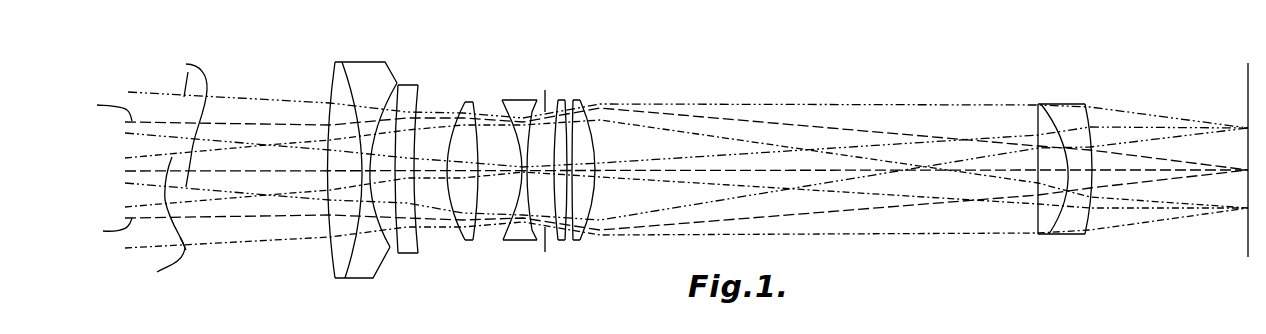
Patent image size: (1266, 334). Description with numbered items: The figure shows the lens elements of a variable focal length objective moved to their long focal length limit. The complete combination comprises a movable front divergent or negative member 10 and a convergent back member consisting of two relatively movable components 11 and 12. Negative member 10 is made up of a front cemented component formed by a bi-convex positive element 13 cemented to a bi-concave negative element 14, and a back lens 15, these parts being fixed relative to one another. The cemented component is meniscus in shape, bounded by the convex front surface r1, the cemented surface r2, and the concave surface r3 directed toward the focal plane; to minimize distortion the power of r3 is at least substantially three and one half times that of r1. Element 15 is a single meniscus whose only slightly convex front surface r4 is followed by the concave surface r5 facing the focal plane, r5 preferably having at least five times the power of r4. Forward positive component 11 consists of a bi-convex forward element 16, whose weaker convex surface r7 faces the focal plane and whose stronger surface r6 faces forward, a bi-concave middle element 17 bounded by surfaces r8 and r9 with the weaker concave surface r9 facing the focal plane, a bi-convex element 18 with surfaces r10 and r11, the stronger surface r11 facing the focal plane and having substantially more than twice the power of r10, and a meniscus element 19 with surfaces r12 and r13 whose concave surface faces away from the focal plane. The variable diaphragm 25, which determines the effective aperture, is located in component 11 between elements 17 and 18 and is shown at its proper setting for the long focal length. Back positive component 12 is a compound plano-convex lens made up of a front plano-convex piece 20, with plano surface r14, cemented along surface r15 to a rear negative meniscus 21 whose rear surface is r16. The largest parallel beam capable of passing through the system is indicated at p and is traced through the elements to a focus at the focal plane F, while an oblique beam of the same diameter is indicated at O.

The front divergent member 10 is at (416, 74).
The forward positive component 11 is at (528, 82).
The back positive component 12 is at (1060, 88).
The front bi-convex element 13 is at (332, 191).
The rearward bi-concave element 14 is at (369, 175).
The back lens 15 is at (429, 183).
The forward positive element 16 is at (474, 176).
The negative middle element 17 is at (518, 192).
The positive back element 18 is at (571, 193).
The positive back element 19 is at (607, 180).
The front plano-convex piece 20 is at (1041, 186).
The rear negative meniscus 21 is at (1087, 180).
The variable diaphragm 25 is at (553, 98).
The focal plane F is at (1248, 238).
The oblique light beam O is at (174, 167).
The parallel beam p is at (108, 166).
The front convex surface of element 13 r1 is at (330, 257).
The cemented surface between elements 13 and 14 r2 is at (354, 258).
The concave rear surface of element 14 r3 is at (388, 242).
The front surface of element 15 r4 is at (397, 232).
The concave rear surface of element 15 r5 is at (420, 243).
The front convex surface of element 16 r6 is at (464, 240).
The rear convex surface of element 16 r7 is at (480, 232).
The front concave surface of element 17 r8 is at (508, 237).
The rear concave surface of element 17 r9 is at (537, 238).
The front convex surface of element 18 r10 is at (558, 246).
The rear convex surface of element 18 r11 is at (567, 244).
The front surface of element 19 r12 is at (578, 240).
The rear surface of element 19 r13 is at (587, 232).
The plano front surface of piece 20 r14 is at (1038, 220).
The cemented surface between pieces 20 and 21 r15 is at (1050, 220).
The rear surface of meniscus 21 r16 is at (1088, 222).